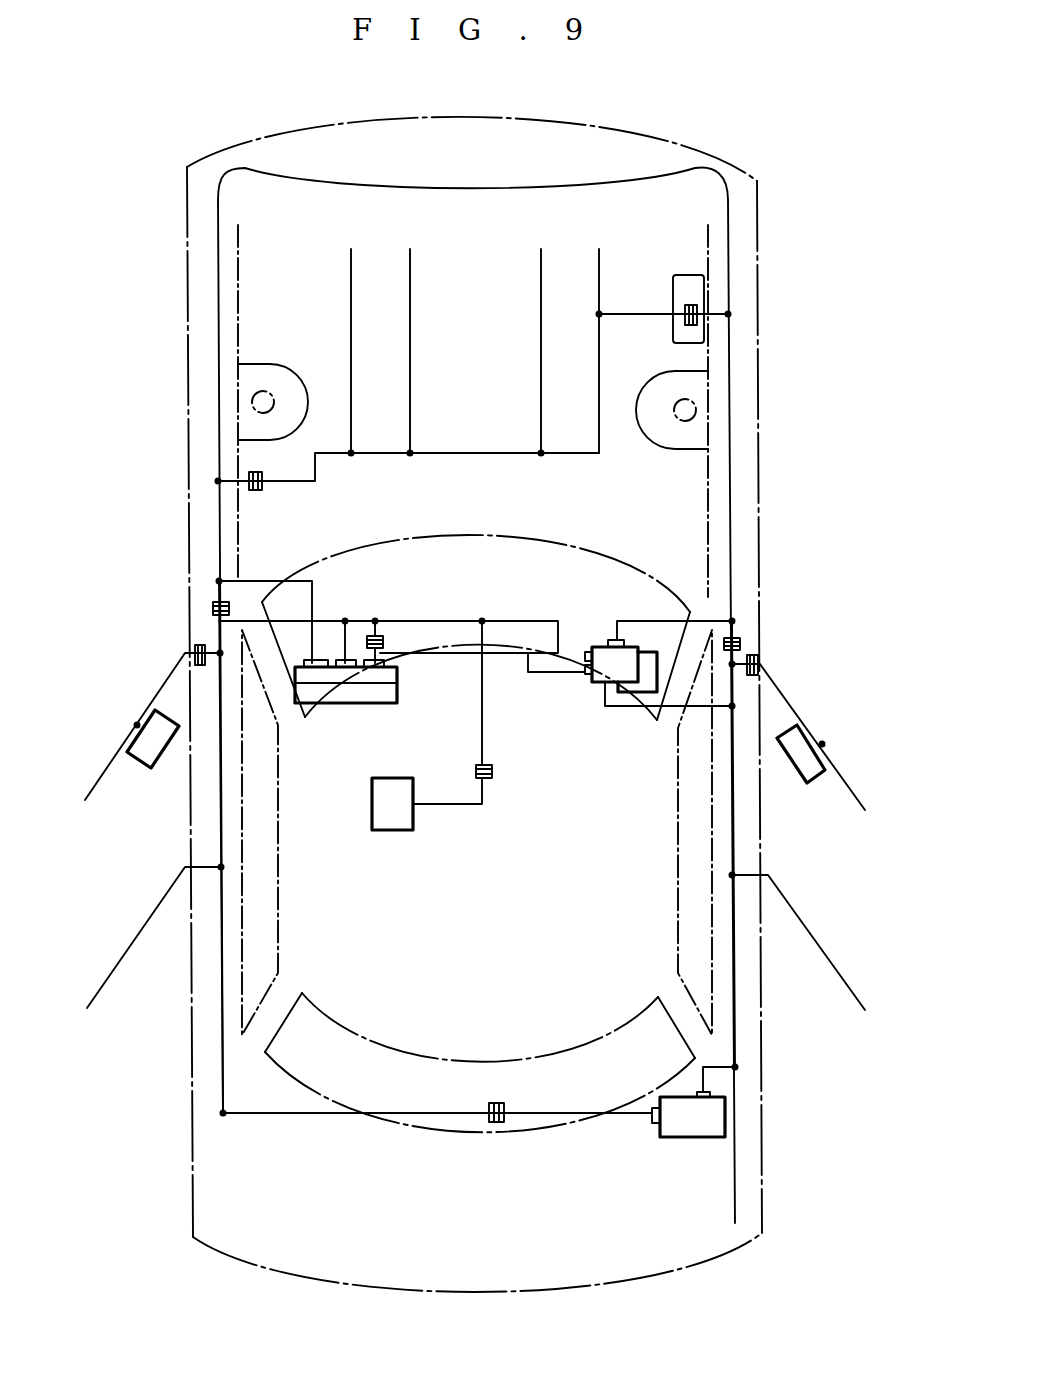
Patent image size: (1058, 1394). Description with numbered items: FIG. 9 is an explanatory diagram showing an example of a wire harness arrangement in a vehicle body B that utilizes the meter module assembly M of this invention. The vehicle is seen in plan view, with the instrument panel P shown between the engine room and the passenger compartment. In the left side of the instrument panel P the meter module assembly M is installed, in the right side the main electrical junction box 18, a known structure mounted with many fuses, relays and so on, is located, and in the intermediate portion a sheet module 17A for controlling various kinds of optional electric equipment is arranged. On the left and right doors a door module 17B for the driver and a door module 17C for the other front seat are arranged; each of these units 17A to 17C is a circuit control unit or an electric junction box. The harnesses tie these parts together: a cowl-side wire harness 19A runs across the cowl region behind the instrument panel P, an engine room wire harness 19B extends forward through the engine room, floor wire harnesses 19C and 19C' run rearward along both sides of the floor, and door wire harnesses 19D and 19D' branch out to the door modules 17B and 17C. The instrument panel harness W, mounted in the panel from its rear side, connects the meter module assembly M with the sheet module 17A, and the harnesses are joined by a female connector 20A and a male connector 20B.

The vehicle body B is at (757, 275).
The instrument panel P is at (647, 580).
The cowl-side wire harness 19A is at (527, 620).
The engine room wire harness 19B is at (595, 180).
The floor wire harness 19C is at (156, 847).
The floor wire harness 19C' is at (543, 879).
The door wire harness 19D is at (154, 711).
The door wire harness 19D' is at (798, 718).
The sheet module 17A is at (372, 805).
The door module 17B is at (127, 747).
The door module 17C is at (812, 765).
The main electrical junction box 18 is at (592, 678).
The female connector 20A is at (383, 636).
The male connector 20B is at (488, 780).
The meter module assembly M is at (400, 680).
The instrument panel harness W is at (505, 655).